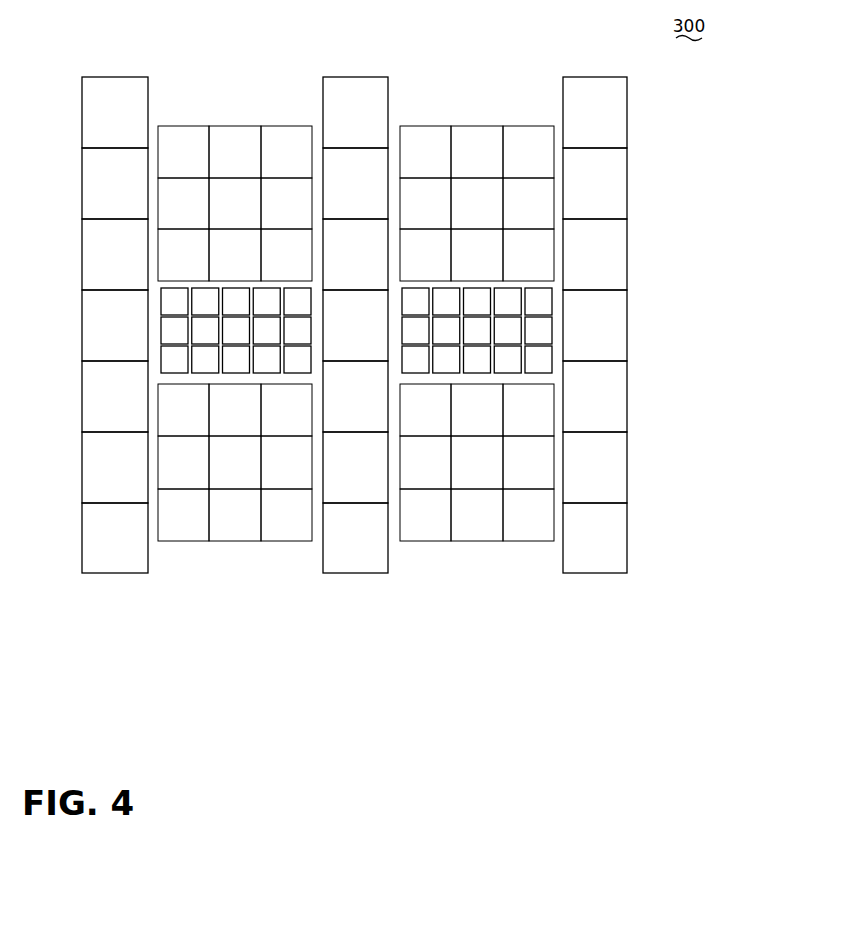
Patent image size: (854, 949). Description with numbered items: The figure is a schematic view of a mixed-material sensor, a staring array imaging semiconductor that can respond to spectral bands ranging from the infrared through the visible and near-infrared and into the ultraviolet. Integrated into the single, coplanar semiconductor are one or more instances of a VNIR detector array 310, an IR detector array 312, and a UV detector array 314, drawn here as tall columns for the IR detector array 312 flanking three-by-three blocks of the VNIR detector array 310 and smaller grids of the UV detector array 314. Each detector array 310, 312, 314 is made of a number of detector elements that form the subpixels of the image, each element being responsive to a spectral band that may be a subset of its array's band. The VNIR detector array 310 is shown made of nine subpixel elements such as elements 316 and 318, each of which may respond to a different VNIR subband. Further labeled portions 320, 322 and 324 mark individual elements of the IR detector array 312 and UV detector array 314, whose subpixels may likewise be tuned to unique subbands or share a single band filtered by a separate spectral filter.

The VNIR detector array 310 is at (232, 121).
The IR detector array 312 is at (108, 578).
The UV detector array 314 is at (160, 331).
The subpixel element 316 is at (438, 126).
The subpixel element 318 is at (495, 126).
The top key 320 is at (627, 112).
The second key 322 is at (627, 181).
The small key 324 is at (553, 297).